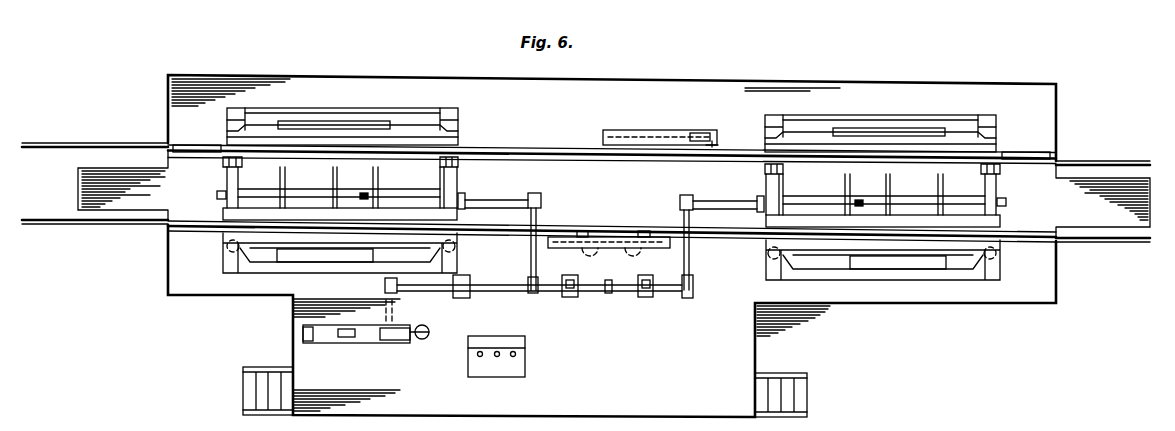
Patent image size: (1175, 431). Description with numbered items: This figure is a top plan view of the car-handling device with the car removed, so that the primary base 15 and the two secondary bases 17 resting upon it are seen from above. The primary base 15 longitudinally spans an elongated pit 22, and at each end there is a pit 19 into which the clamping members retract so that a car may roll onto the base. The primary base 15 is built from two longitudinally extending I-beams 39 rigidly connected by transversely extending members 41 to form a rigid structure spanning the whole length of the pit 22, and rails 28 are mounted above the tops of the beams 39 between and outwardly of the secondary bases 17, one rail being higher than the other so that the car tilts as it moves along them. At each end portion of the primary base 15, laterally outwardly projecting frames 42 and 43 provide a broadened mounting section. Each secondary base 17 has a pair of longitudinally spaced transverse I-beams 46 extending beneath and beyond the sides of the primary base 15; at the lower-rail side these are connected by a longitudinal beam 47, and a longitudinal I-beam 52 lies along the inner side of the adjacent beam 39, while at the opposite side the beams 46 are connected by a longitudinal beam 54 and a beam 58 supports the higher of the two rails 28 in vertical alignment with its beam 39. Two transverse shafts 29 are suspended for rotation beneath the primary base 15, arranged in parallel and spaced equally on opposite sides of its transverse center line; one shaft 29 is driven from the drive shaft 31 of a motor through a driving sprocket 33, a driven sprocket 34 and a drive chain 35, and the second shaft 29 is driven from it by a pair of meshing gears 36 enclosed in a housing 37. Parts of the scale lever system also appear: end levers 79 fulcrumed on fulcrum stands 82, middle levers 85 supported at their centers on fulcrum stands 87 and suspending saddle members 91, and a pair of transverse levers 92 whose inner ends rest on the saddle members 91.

The primary base 15 is at (543, 165).
The secondary base 17 is at (463, 131).
The pit 19 is at (118, 203).
The elongated pit 22 is at (828, 288).
The rail 28 is at (357, 148).
The shaft 29 is at (585, 230).
The drive shaft 31 is at (719, 146).
The driving sprocket 33 is at (706, 134).
The driven sprocket 34 is at (632, 130).
The drive chain 35 is at (680, 132).
The meshing gear 36 is at (611, 261).
The housing 37 is at (565, 248).
The I-beam 39 is at (517, 146).
The transversely extending member 41 is at (322, 178).
The laterally outwardly projecting frame 42 is at (273, 258).
The laterally outwardly projecting frame 43 is at (323, 118).
The transverse I-beam 46 is at (226, 177).
The beam 47 is at (288, 268).
The I-beam 52 is at (225, 214).
The longitudinally extending beam 54 is at (421, 114).
The longitudinally extending beam 58 is at (252, 146).
The end lever 79 is at (268, 200).
The fulcrum stand 82 is at (217, 195).
The middle lever 85 is at (434, 201).
The fulcrum stand 87 is at (461, 210).
The saddle member 91 is at (530, 195).
The transverse lever 92 is at (532, 253).